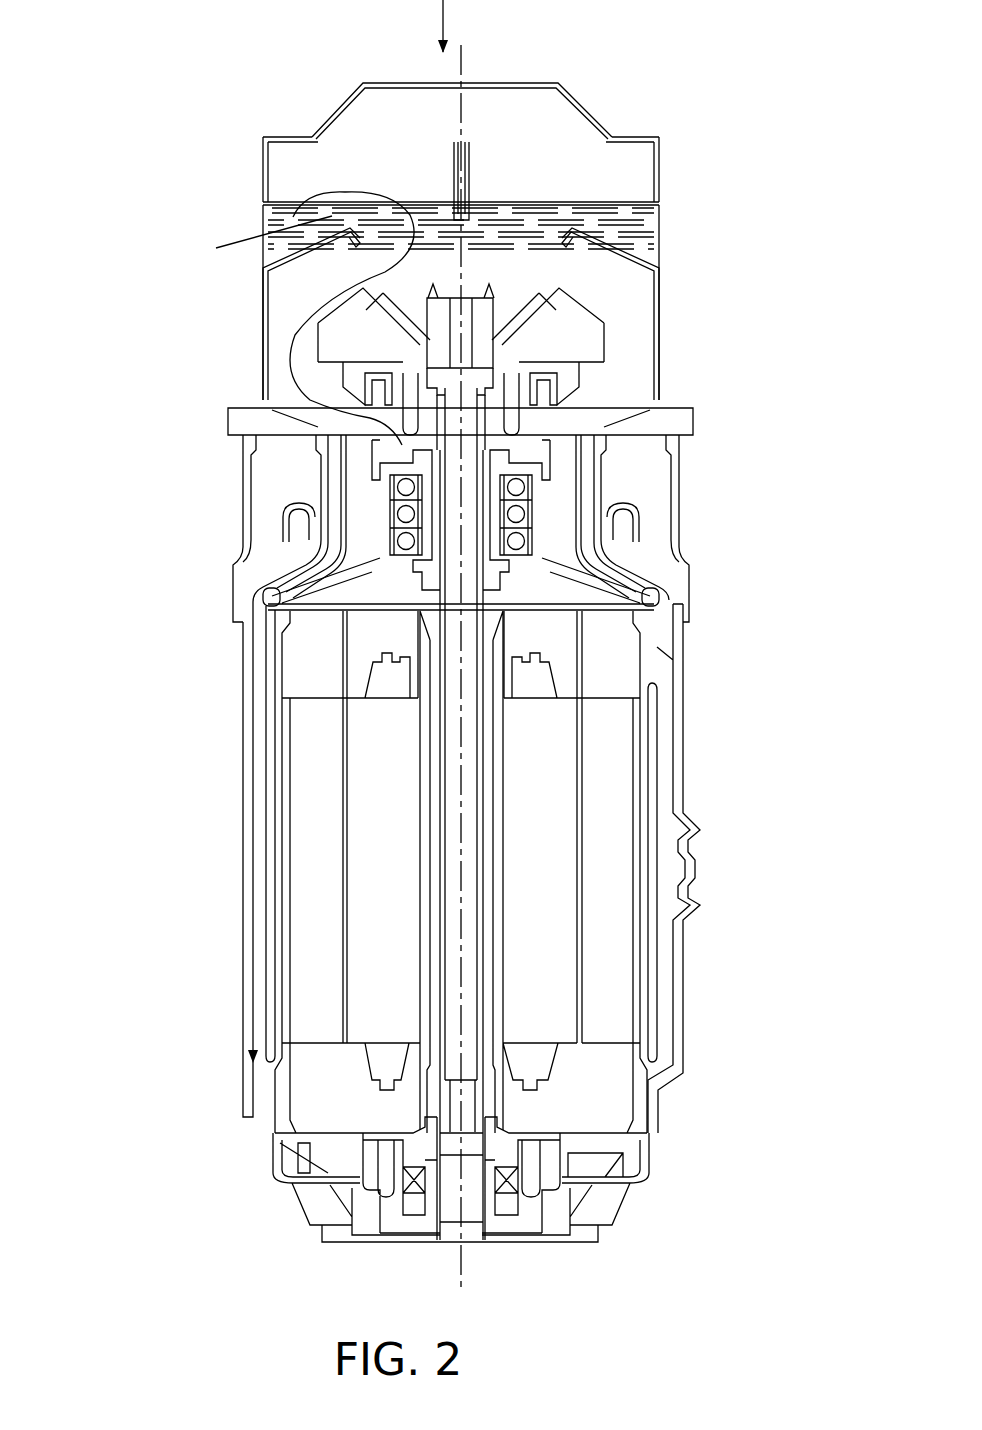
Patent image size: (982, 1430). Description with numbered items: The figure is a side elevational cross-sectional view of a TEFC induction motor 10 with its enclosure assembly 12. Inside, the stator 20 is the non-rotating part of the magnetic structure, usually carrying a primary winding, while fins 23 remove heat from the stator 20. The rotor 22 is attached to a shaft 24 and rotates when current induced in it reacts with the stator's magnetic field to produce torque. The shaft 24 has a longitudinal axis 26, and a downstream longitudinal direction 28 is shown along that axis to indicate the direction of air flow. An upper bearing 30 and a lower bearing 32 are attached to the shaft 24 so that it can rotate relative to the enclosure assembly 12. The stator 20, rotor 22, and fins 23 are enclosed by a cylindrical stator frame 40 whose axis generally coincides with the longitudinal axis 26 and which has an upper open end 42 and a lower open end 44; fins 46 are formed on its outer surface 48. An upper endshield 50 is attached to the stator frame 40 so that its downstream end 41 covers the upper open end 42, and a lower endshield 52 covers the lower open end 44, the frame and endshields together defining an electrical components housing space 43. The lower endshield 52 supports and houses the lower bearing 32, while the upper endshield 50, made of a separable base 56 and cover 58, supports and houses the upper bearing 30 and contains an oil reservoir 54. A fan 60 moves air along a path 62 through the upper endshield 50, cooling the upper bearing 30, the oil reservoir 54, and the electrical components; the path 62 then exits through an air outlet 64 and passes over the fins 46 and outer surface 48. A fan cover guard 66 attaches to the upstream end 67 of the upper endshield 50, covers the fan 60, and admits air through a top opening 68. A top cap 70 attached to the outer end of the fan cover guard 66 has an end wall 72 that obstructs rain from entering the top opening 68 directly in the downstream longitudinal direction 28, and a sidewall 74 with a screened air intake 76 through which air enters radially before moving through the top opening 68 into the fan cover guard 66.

The TEFC induction motor 10 is at (183, 67).
The enclosure assembly 12 is at (136, 266).
The stator 20 is at (618, 738).
The rotor 22 is at (548, 975).
The fins 23 is at (602, 660).
The shaft 24 is at (470, 903).
The longitudinal axis 26 is at (462, 62).
The downstream longitudinal direction 28 is at (438, 22).
The upper bearing 30 is at (387, 508).
The lower bearing 32 is at (522, 1175).
The stator frame 40 is at (732, 862).
The downstream end 41 is at (526, 630).
The upper open end 42 is at (586, 592).
The electrical components housing space 43 is at (370, 651).
The lower open end 44 is at (606, 1150).
The fins 46 is at (243, 752).
The outer surface 48 is at (265, 768).
The upper endshield 50 is at (710, 480).
The lower endshield 52 is at (262, 1190).
The oil reservoir 54 is at (266, 509).
The base 56 is at (262, 499).
The cover 58 is at (233, 425).
The fan 60 is at (600, 296).
The path 62 is at (222, 250).
The air outlet 64 is at (241, 629).
The fan cover guard 66 is at (690, 302).
The upstream end 67 is at (614, 393).
The top opening 68 is at (533, 204).
The top cap 70 is at (685, 168).
The end wall 72 is at (540, 83).
The sidewall 74 is at (262, 160).
The screened air intake 76 is at (244, 222).